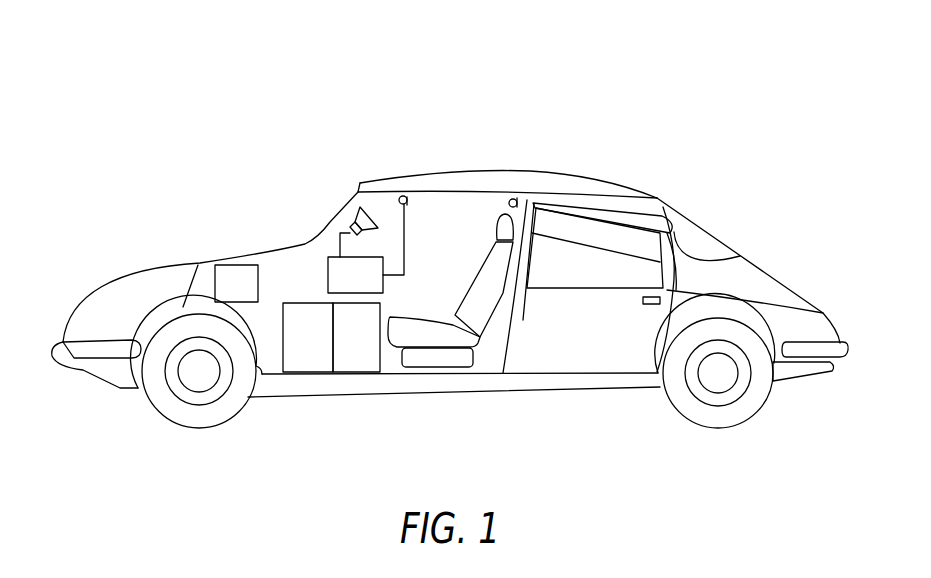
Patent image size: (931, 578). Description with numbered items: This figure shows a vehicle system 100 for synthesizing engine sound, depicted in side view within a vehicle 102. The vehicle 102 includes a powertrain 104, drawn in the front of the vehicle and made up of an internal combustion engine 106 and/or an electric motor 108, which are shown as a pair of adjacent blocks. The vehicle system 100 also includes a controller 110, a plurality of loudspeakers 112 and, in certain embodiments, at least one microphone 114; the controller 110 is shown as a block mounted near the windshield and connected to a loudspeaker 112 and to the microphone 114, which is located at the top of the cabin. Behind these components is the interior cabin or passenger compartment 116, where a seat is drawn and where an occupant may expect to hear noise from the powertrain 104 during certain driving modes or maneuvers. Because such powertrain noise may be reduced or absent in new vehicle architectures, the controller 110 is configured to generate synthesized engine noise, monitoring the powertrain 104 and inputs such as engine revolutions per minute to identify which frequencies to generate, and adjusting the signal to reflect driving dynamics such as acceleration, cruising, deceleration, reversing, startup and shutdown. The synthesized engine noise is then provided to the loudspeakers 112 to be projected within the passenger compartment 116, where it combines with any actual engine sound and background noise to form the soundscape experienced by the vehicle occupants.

The vehicle system 100 is at (209, 90).
The vehicle 102 is at (693, 217).
The powertrain 104 is at (279, 317).
The internal combustion engine 106 is at (306, 352).
The electric motor 108 is at (355, 352).
The controller 110 is at (357, 290).
The loudspeakers 112 is at (354, 224).
The microphone 114 is at (402, 196).
The passenger compartment 116 is at (444, 214).